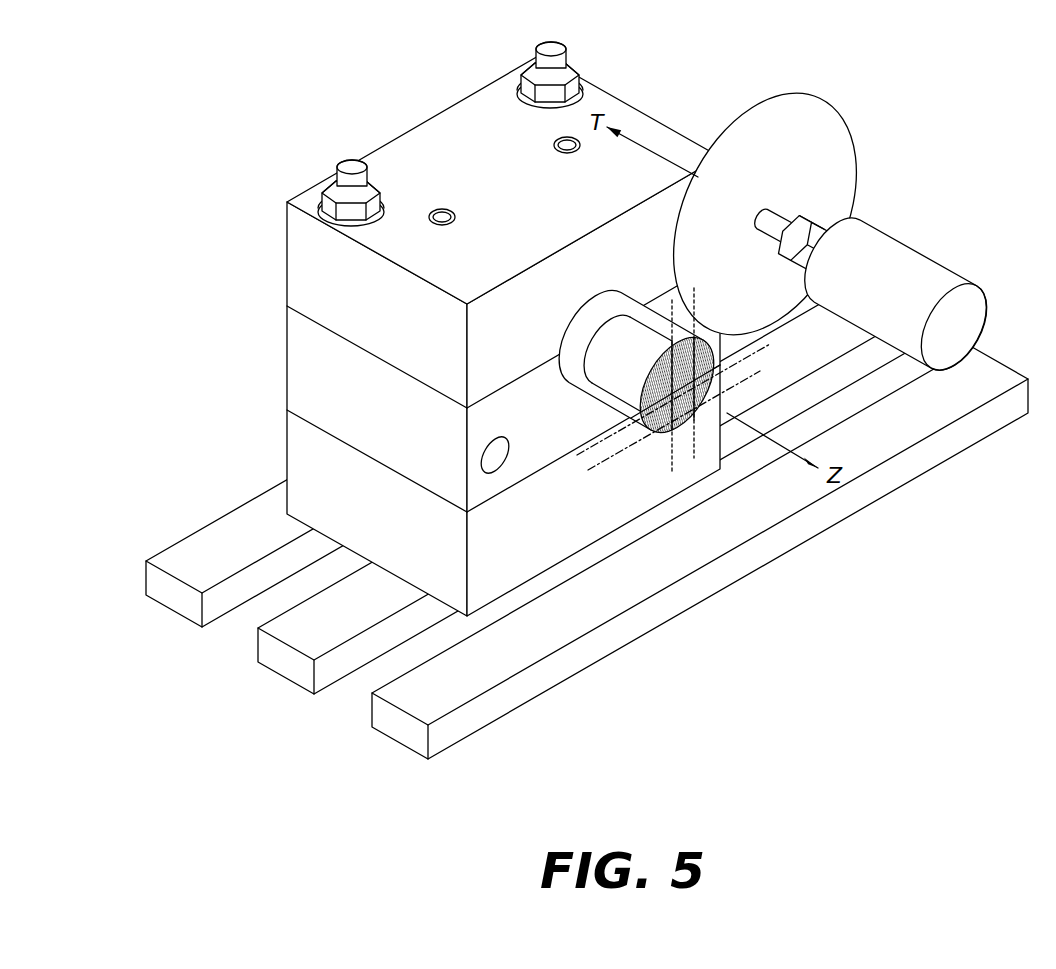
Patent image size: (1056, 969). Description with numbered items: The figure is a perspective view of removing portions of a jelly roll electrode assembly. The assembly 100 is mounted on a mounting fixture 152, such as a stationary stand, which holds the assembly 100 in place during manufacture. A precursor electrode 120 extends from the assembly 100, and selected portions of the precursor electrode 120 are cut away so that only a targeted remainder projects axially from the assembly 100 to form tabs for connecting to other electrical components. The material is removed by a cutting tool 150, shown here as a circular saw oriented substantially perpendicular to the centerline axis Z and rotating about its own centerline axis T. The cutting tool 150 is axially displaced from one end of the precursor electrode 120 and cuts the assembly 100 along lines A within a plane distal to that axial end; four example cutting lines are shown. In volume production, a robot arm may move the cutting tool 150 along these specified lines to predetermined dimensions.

The assembly 100 is at (633, 447).
The precursor electrode 120 is at (630, 347).
The cutting tool 150 is at (808, 110).
The mounting fixture 152 is at (442, 132).